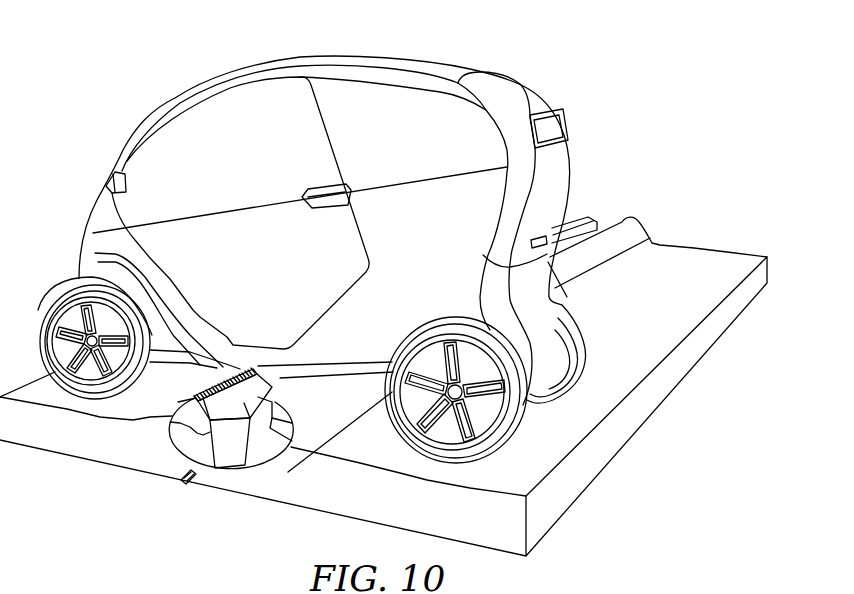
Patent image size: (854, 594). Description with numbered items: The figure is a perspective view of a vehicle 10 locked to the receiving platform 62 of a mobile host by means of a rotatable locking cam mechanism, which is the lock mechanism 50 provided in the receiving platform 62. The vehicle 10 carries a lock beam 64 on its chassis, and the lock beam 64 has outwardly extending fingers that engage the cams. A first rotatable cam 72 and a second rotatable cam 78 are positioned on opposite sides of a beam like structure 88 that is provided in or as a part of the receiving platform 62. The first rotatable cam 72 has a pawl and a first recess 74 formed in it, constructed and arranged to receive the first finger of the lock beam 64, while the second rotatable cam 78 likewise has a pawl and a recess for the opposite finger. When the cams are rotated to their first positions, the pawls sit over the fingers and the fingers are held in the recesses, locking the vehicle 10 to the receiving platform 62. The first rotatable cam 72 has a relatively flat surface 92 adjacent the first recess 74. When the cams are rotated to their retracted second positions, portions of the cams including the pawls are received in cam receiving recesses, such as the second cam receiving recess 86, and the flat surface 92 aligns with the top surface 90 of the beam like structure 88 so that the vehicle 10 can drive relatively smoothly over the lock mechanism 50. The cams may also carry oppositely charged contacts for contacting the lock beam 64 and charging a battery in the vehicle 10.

The vehicle 10 is at (201, 84).
The receiving platform 62 is at (622, 372).
The locking mechanism 50 is at (184, 478).
The flat surface 92 is at (221, 404).
The lock beam 64 is at (261, 385).
The beam like structure 88 is at (240, 456).
The top surface 90 is at (254, 400).
The first rotatable cam 72 is at (188, 404).
The first recess 74 is at (174, 440).
The second rotatable cam 78 is at (272, 426).
The second cam receiving recess 86 is at (286, 460).